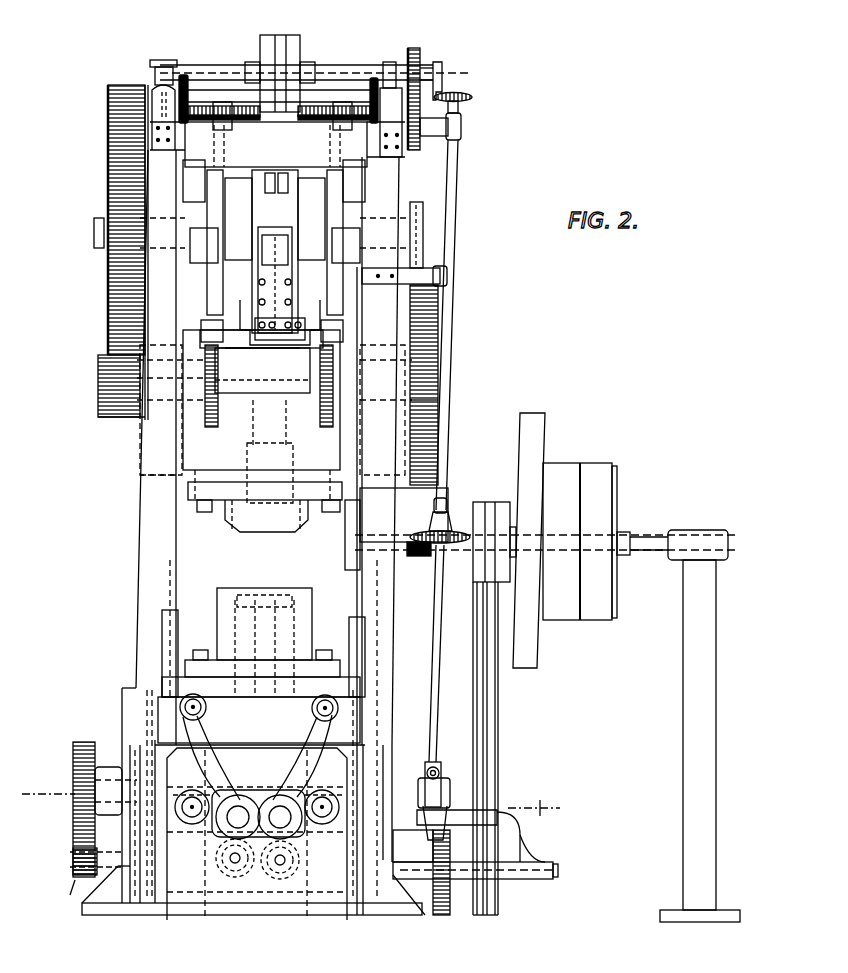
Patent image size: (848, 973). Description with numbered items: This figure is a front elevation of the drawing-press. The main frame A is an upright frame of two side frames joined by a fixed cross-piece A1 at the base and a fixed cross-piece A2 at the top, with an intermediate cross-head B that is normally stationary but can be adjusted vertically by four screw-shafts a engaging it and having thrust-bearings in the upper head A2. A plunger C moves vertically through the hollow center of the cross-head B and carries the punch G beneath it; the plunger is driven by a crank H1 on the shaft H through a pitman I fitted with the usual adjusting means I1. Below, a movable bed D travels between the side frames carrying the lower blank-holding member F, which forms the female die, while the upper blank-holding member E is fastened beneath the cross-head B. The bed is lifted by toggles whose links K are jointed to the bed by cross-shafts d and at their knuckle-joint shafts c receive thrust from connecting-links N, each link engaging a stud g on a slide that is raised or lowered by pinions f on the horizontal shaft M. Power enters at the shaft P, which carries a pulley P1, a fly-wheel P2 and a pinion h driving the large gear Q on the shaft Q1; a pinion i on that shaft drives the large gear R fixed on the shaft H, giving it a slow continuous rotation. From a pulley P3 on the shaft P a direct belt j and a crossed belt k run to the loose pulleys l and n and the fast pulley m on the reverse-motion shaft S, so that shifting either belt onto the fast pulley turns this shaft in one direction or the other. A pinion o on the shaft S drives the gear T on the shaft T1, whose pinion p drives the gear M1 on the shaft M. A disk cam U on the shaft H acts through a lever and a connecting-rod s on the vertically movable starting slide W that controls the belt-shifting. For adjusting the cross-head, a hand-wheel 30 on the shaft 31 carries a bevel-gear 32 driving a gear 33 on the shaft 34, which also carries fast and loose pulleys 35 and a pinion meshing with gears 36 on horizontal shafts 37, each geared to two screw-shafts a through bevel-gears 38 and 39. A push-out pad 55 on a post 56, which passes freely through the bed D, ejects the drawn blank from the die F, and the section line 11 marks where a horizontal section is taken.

The wheel 30 is at (448, 544).
The shaft 31 is at (455, 245).
The bevel-gear 32 is at (470, 100).
The bevel-gear 33 is at (443, 72).
The shaft 34 is at (310, 69).
The fast and loose pulleys 35 is at (291, 73).
The gears 36 is at (418, 50).
The horizontal shafts 37 is at (218, 92).
The bevel-gear 38 is at (186, 73).
The bevel-gear 39 is at (205, 120).
The push-out pad 55 is at (272, 600).
The post 56 is at (265, 635).
The section line 11 is at (295, 801).
The main frame A is at (247, 421).
The cross-piece at the base A1 is at (187, 875).
The cross-piece at the top A2 is at (277, 126).
The cross-head B is at (216, 440).
The plunger C is at (255, 328).
The bed D is at (208, 709).
The cross-shafts d is at (312, 712).
The upper blank-holding member E is at (228, 515).
The lower blank-holding member F is at (220, 620).
The punch G is at (280, 530).
The shaft H is at (94, 230).
The crank H1 is at (275, 219).
The pitman I is at (292, 285).
The adjusting means I1 is at (274, 237).
The toggle arms K is at (259, 798).
The horizontal shaft M is at (73, 797).
The gear-wheel M1 is at (82, 750).
The connecting-links N is at (212, 833).
The shaft P is at (650, 540).
The pulley P1 is at (580, 556).
The fly-wheel P2 is at (531, 553).
The pulley P3 is at (494, 527).
The gear-wheel Q is at (438, 440).
The shaft Q1 is at (98, 385).
The gear R is at (108, 298).
The reverse-motion shaft S is at (558, 872).
The gear-wheel T is at (437, 918).
The shaft T1 is at (73, 862).
The disk cam U is at (423, 212).
The starting cam slide W is at (427, 760).
The screw-shafts a is at (215, 290).
The knuckle-joint shafts c is at (258, 806).
The pinions f is at (257, 769).
The studs g is at (255, 869).
The pinion h is at (415, 556).
The pinion i is at (108, 417).
The direct belt j is at (470, 653).
The crossed belt k is at (498, 752).
The loose pulley l is at (470, 918).
The fast pulley m is at (484, 918).
The loose pulley n is at (496, 918).
The pinion o is at (413, 846).
The pinion p is at (68, 885).
The connecting-rod s is at (431, 672).